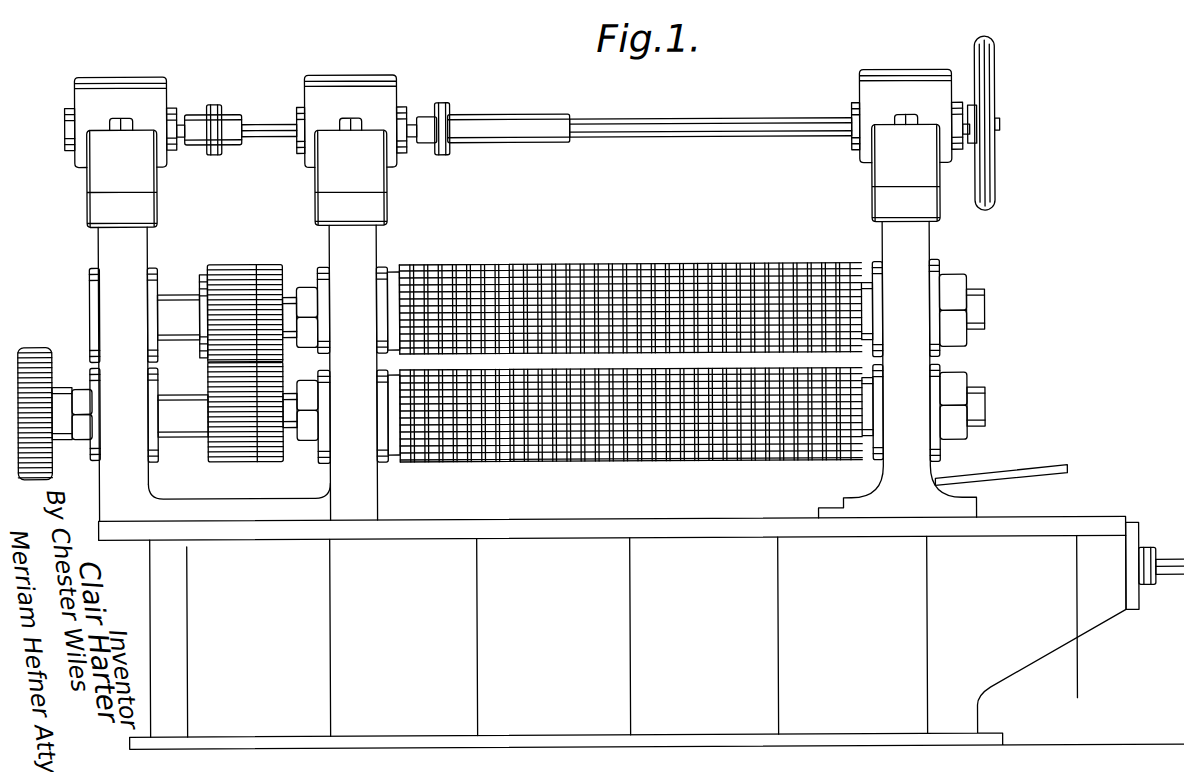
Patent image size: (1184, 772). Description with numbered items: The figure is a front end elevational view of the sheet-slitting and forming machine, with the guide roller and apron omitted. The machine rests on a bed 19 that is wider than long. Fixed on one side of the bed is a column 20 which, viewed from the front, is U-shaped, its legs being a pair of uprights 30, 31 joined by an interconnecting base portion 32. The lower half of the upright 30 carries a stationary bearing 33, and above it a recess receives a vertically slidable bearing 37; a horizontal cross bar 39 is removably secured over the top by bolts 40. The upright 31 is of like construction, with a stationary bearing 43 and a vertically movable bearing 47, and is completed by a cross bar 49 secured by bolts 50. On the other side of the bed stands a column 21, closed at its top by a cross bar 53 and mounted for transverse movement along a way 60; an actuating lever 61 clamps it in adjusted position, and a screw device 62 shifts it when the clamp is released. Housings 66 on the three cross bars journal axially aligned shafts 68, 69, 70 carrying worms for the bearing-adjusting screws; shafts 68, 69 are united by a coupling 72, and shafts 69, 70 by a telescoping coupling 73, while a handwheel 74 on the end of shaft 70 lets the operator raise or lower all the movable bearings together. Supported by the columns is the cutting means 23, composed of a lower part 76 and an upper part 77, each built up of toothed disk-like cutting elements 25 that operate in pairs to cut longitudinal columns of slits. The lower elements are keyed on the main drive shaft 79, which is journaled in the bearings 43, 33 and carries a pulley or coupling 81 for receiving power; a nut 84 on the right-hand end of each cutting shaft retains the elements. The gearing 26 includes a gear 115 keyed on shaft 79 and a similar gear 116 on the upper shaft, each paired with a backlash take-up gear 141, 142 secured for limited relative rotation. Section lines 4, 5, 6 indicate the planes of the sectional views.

The housing 66 is at (104, 75).
The bolts 40 is at (128, 116).
The shaft 68 is at (184, 125).
The coupling 72 is at (217, 99).
The shaft 69 is at (258, 122).
The bolts 50 is at (364, 118).
The coupling 73 is at (447, 103).
The shaft 70 is at (814, 119).
The cross bar 53 is at (888, 172).
The handwheel 74 is at (994, 184).
The cross bar 39 is at (103, 178).
The cross bar 49 is at (325, 172).
The upright 30 is at (125, 256).
The upright 31 is at (349, 252).
The column 21 is at (936, 239).
The column 20 is at (99, 260).
The vertically movable bearing 47 is at (384, 266).
The stationary bearing 43 is at (388, 462).
The nut 84 is at (859, 263).
The stationary bearing 33 is at (153, 455).
The base portion 32 is at (213, 506).
The gearing 26 is at (223, 265).
The gear 116 is at (240, 277).
The gear 115 is at (209, 444).
The vertically slidable bearing 37 is at (158, 292).
The shaft 79 is at (172, 402).
The backlash take-up gear 142 is at (268, 299).
The backlash take-up gear 141 is at (274, 396).
The pulley or coupling 81 is at (38, 348).
The first means 23 is at (654, 264).
The cutting elements 25 is at (561, 265).
The upper part 77 is at (869, 316).
The lower part 76 is at (869, 411).
The bed 19 is at (739, 547).
The way 60 is at (1097, 514).
The screw device 62 is at (1156, 549).
The actuating lever 61 is at (1045, 467).
The section line 4- 4 is at (293, 586).
The section line 5- 5 is at (350, 596).
The section line 6- 6 is at (268, 479).